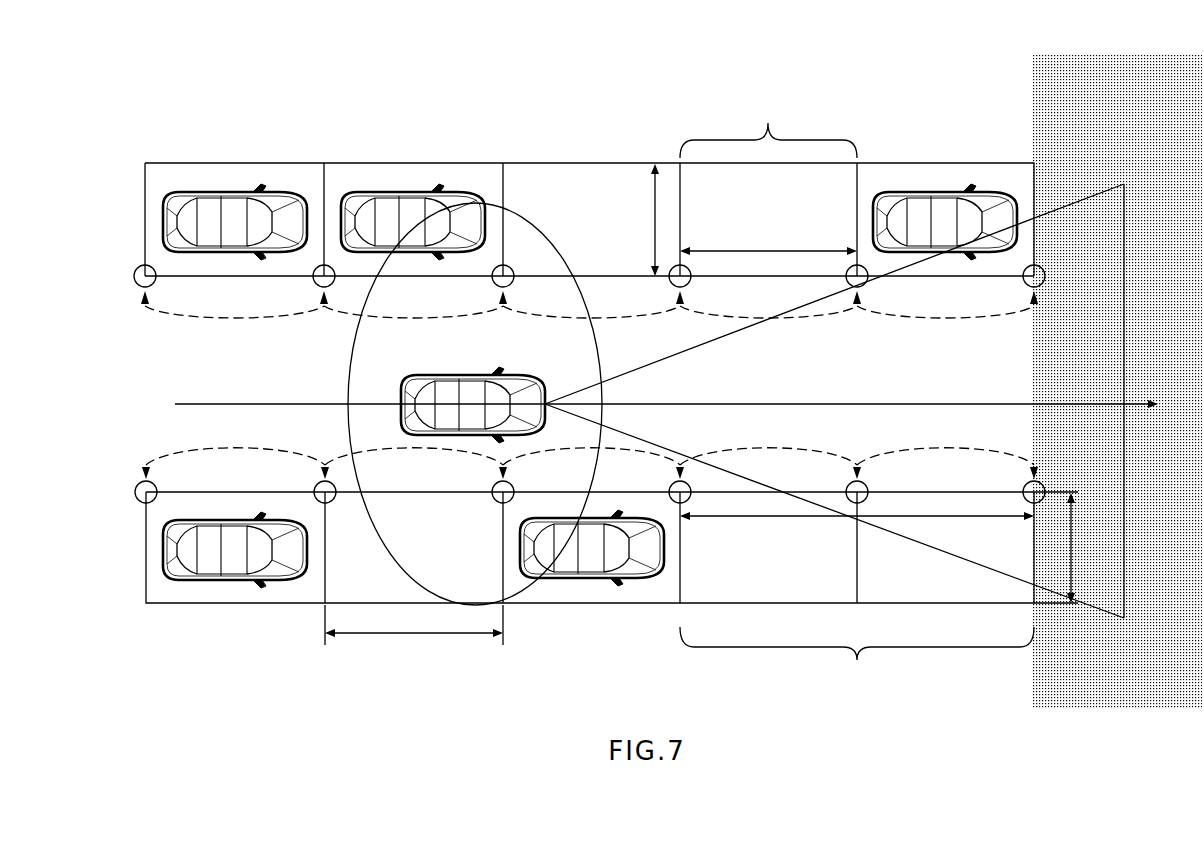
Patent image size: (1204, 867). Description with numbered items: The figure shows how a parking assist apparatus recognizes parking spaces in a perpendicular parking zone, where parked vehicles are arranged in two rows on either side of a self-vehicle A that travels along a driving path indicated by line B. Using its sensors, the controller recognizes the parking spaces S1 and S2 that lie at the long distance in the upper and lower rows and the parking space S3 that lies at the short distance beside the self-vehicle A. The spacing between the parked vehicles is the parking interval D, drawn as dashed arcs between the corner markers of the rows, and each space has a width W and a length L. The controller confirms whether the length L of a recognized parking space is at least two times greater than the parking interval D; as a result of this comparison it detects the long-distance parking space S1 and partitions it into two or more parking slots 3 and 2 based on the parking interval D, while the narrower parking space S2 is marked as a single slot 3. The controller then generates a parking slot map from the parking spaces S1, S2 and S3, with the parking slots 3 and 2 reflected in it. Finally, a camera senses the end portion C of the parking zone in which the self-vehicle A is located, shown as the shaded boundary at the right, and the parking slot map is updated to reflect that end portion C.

The parking slot 2 is at (945, 565).
The parking slot 3 is at (768, 401).
The host vehicle A is at (473, 392).
The vehicle traveling direction line B is at (666, 389).
The end portion of the parking zone C is at (1144, 401).
The parking interval D is at (590, 450).
The parking space width W is at (864, 383).
The length of the recognized parking space L is at (679, 436).
The parking space at the long distance S1 is at (857, 659).
The parking space at the long distance S2 is at (768, 126).
The parking space at the short distance S3 is at (414, 547).